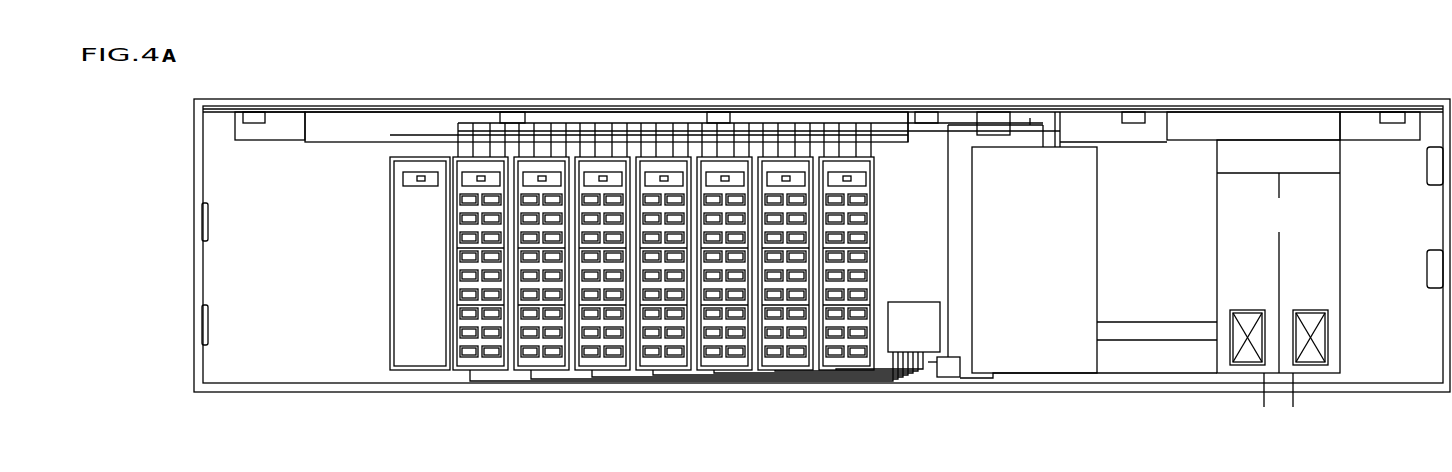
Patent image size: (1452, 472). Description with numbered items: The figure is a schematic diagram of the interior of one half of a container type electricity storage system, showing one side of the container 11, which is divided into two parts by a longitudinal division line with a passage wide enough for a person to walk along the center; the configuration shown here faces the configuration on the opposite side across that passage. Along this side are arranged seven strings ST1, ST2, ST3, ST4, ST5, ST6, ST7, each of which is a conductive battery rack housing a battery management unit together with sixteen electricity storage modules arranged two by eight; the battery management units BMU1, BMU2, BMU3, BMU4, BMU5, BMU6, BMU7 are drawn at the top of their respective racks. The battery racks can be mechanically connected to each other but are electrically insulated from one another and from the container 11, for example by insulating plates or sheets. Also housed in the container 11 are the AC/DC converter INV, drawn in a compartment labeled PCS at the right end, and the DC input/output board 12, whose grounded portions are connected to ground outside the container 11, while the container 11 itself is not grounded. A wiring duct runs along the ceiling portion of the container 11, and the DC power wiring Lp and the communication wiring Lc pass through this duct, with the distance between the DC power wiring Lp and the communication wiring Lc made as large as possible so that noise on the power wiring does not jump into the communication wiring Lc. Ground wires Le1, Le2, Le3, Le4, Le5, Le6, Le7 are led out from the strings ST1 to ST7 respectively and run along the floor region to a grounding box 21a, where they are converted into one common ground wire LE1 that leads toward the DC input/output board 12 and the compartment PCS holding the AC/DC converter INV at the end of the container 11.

The container 11 is at (340, 99).
The DC input/output board 12 is at (1068, 147).
The grounding box 21a is at (925, 352).
The string ST1 is at (470, 393).
The string ST2 is at (530, 393).
The string ST3 is at (590, 393).
The string ST4 is at (650, 393).
The string ST5 is at (708, 393).
The string ST6 is at (768, 393).
The string ST7 is at (828, 393).
The battery management unit BMU1 is at (465, 157).
The battery management unit BMU2 is at (524, 157).
The battery management unit BMU3 is at (585, 157).
The battery management unit BMU4 is at (645, 157).
The battery management unit BMU5 is at (706, 157).
The battery management unit BMU6 is at (765, 157).
The battery management unit BMU7 is at (826, 157).
The ground wire Le1 is at (681, 366).
The ground wire Le2 is at (714, 365).
The ground wire Le3 is at (747, 364).
The ground wire Le4 is at (780, 363).
The ground wire Le5 is at (813, 362).
The ground wire Le6 is at (846, 361).
The ground wire Le7 is at (879, 361).
The ground wire LE1 is at (950, 295).
The communication wiring Lc is at (945, 100).
The DC power wiring Lp is at (968, 125).
The power conditioning system PCS is at (1278, 273).
The AC/DC converter INV is at (1248, 165).